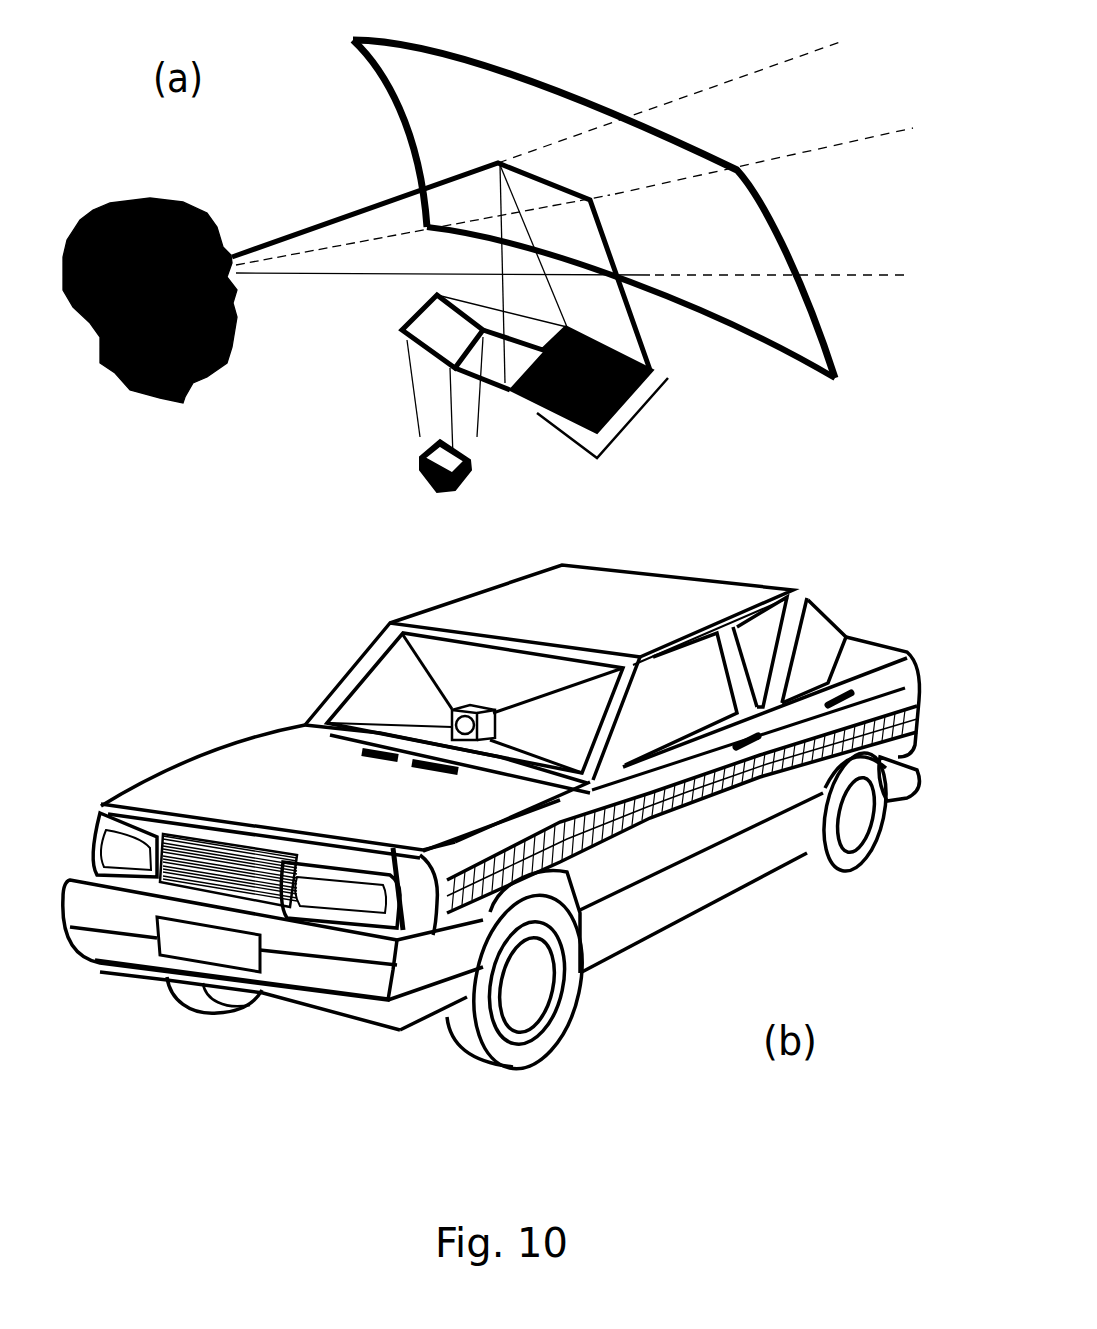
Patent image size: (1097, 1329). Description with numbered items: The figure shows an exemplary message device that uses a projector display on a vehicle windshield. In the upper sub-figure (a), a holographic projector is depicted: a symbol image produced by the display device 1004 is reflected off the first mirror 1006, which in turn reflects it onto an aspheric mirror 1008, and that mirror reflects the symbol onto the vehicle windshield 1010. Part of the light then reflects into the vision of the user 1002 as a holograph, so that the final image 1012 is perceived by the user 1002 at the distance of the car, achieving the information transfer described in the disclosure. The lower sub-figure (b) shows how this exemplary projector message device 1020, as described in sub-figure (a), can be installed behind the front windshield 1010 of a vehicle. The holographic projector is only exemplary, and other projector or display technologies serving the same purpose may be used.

The user 1002 is at (152, 398).
The display device 1004 is at (477, 473).
The first mirror 1006 is at (400, 333).
The second mirror 1008 is at (640, 400).
The vehicle windshield 1010 is at (835, 380).
The final image 1012 is at (840, 92).
The projector message device 1020 is at (537, 688).